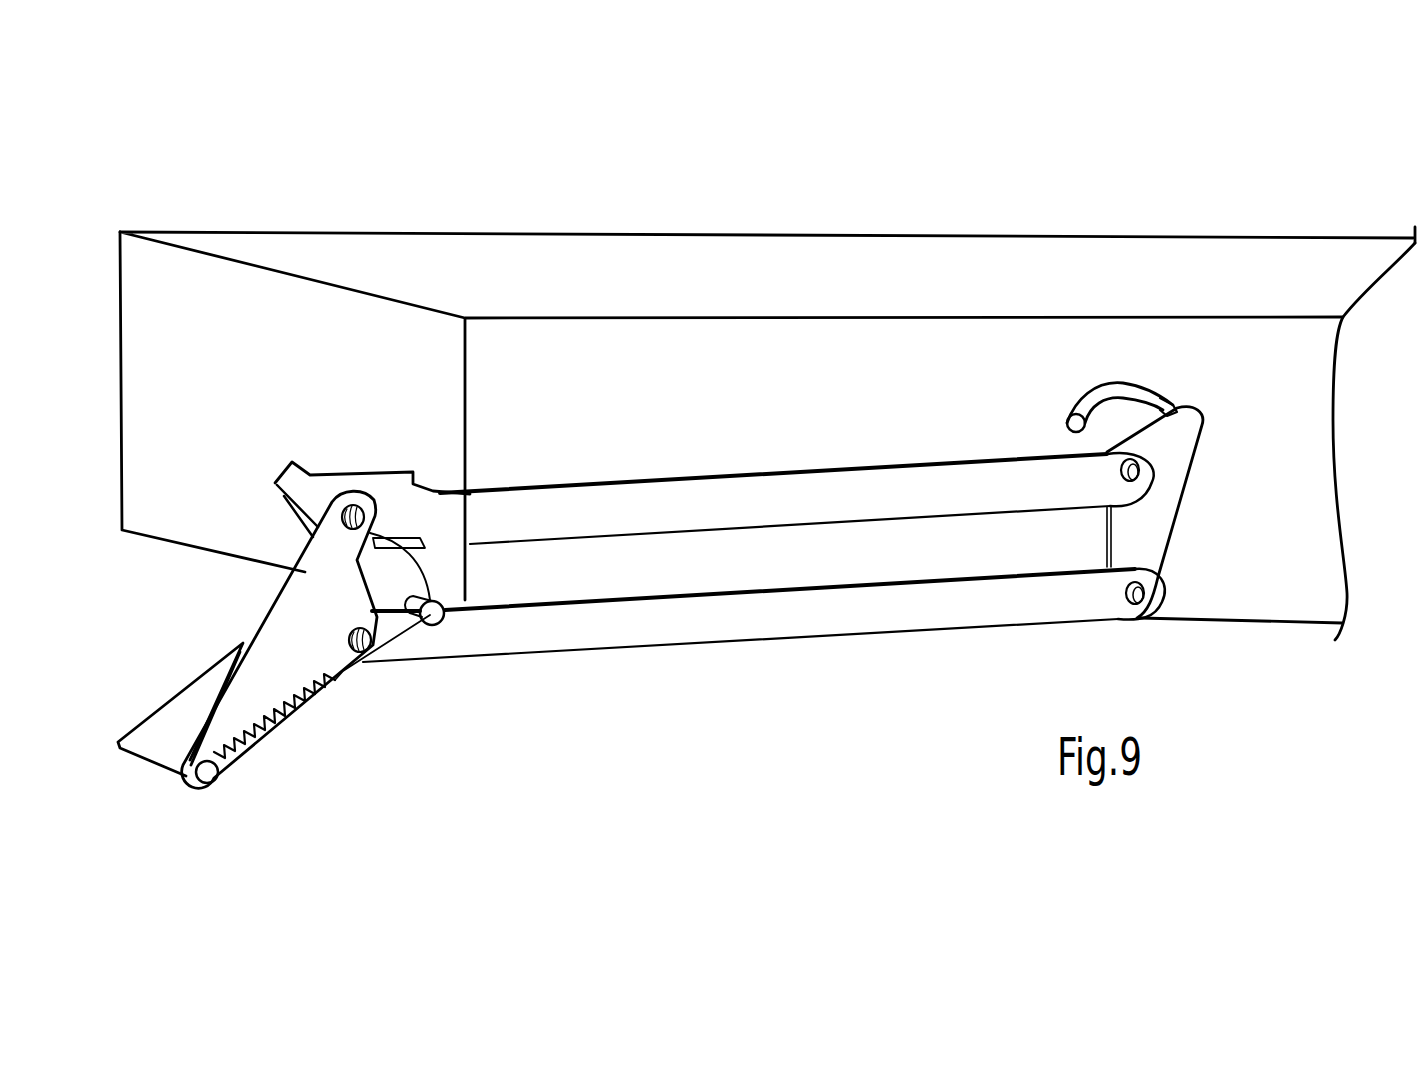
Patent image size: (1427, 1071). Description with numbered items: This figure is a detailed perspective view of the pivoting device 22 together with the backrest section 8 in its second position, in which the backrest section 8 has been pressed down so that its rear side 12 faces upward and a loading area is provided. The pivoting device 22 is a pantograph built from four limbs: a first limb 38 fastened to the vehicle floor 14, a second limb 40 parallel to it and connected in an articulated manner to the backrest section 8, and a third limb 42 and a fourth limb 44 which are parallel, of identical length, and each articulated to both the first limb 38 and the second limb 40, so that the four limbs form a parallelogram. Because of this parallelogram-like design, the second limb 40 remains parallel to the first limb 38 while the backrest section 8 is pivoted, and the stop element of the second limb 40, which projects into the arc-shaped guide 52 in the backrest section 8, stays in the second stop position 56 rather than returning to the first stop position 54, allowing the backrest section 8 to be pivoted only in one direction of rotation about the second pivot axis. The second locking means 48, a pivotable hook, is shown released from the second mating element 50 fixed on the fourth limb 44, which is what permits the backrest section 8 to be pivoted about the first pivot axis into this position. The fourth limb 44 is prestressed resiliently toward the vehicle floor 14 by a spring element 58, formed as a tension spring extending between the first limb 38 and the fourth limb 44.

The backrest section 8 is at (207, 388).
The rear side 12 is at (570, 280).
The vehicle floor 14 is at (203, 835).
The pivoting device 22 is at (893, 645).
The first limb 38 is at (343, 593).
The second limb 40 is at (1150, 512).
The third limb 42 is at (735, 510).
The fourth limb 44 is at (737, 625).
The second locking means 48 is at (302, 482).
The second mating element 50 is at (387, 575).
The guide 52 is at (1127, 393).
The first stop position 54 is at (1073, 407).
The second stop position 56 is at (1173, 397).
The spring element 58 is at (283, 727).